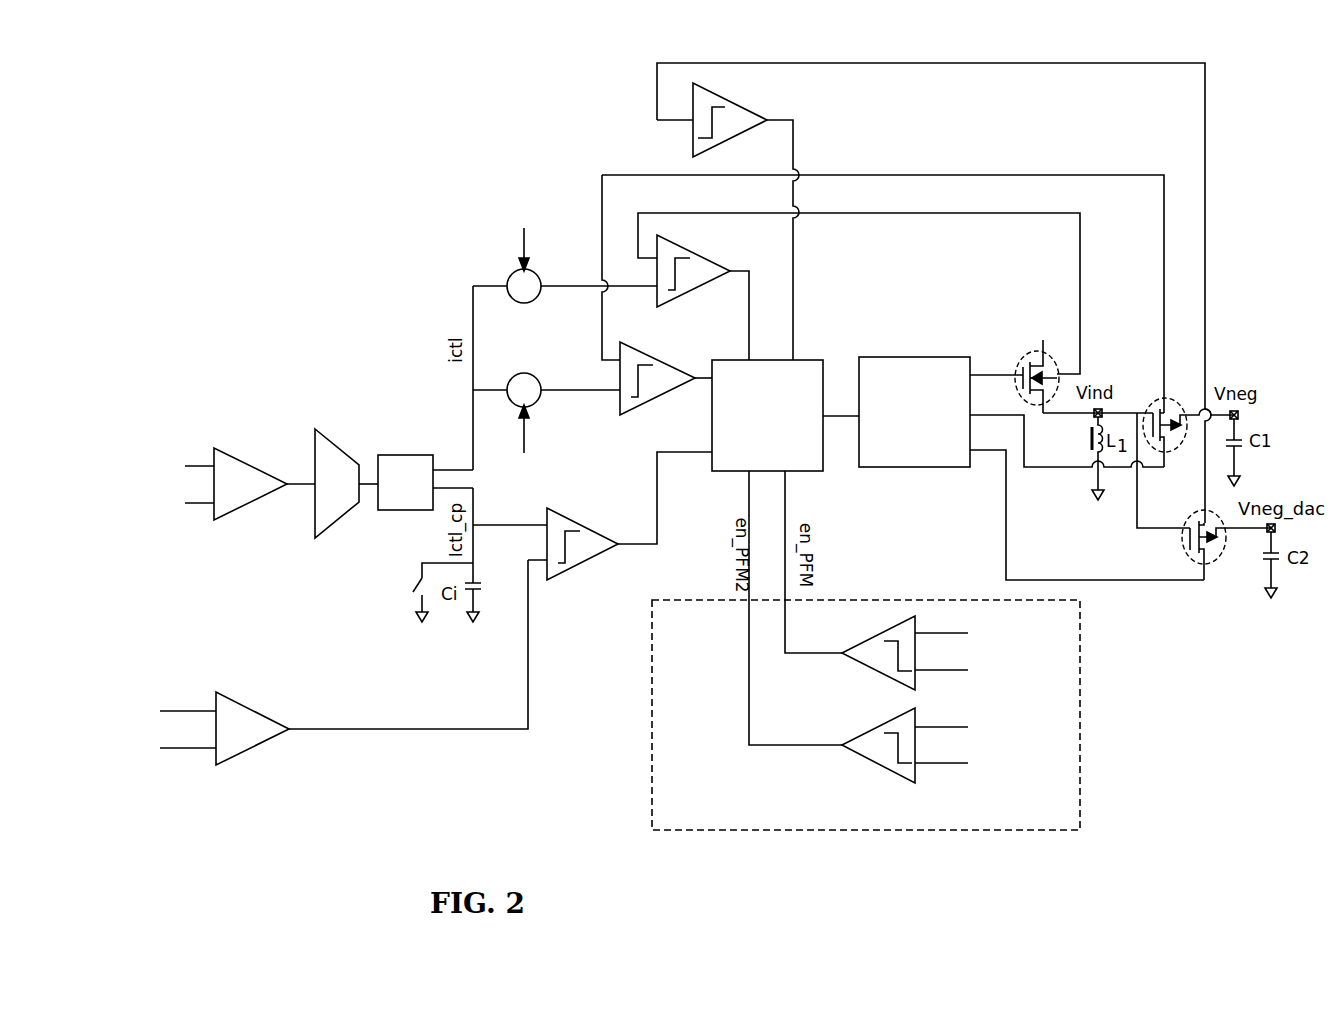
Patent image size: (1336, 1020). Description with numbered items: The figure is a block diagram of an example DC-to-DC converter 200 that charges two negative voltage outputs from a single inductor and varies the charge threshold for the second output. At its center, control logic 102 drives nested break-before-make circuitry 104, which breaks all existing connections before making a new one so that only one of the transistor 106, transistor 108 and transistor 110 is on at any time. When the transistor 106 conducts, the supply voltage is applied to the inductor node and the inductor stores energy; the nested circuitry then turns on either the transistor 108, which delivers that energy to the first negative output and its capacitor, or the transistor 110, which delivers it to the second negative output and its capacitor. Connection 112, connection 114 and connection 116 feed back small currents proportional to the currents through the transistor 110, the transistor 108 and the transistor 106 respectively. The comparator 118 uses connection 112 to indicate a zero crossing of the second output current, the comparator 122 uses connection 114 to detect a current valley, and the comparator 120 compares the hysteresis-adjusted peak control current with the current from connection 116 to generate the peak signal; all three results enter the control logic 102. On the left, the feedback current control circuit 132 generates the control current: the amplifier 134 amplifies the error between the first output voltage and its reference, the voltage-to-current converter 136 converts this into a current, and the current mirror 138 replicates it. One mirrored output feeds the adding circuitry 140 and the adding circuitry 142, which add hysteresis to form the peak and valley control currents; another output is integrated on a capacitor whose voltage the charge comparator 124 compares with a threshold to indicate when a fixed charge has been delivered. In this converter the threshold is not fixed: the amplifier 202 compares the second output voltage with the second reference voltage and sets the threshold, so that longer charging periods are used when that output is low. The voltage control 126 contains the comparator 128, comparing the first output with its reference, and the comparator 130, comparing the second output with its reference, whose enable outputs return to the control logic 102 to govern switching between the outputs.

The DC-to-DC converter 200 is at (164, 107).
The control logic 102 is at (812, 360).
The nested break-before-make circuitry 104 is at (888, 357).
The transistor 106 is at (1027, 352).
The transistor 108 is at (1160, 398).
The transistor 110 is at (1203, 510).
The connection 112 is at (960, 68).
The connection 114 is at (942, 174).
The connection 116 is at (946, 213).
The comparator 118 is at (752, 127).
The ipk comparator 120 is at (700, 290).
The comparator 122 is at (672, 390).
The charge comparator 124 is at (583, 566).
The voltage control 126 is at (862, 600).
The comparator 128 is at (857, 666).
The comparator 130 is at (862, 758).
The feedback current control circuit 132 is at (262, 612).
The amplifier 134 is at (242, 510).
The voltage-to-current converter 136 is at (349, 518).
The current mirror 138 is at (390, 455).
The adding circuitry 140 is at (538, 298).
The adding circuitry 142 is at (538, 402).
The amplifier 202 is at (255, 752).